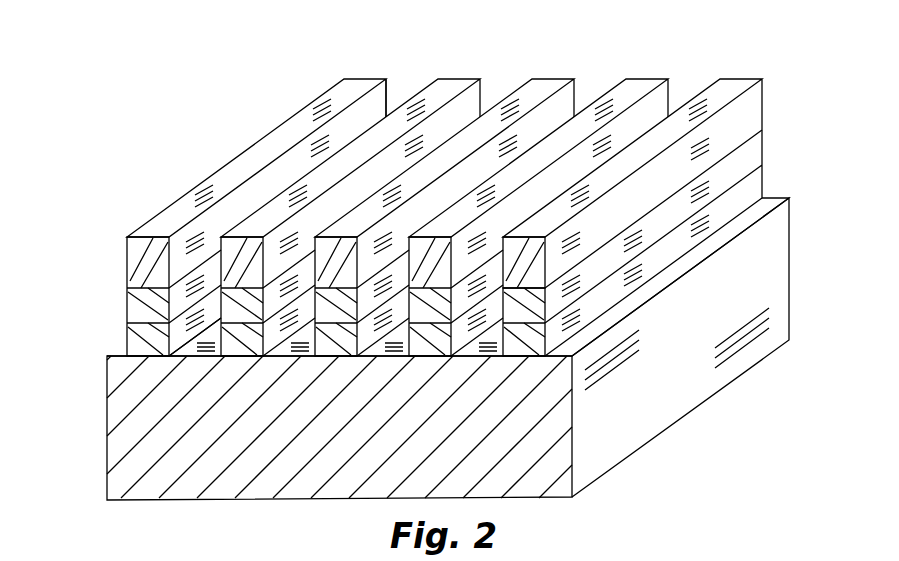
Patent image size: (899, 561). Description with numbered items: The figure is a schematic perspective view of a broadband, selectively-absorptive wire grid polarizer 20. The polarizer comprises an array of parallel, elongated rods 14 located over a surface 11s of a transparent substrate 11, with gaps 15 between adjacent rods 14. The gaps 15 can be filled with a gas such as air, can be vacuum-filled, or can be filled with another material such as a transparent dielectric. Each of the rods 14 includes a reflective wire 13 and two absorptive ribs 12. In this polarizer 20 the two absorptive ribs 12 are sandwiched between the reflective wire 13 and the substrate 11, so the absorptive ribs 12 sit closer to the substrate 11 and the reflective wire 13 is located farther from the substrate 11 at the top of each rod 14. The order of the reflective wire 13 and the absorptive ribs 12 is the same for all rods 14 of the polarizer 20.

The selectively-absorptive wire grid polarizer 20 is at (132, 111).
The gaps 15 is at (399, 78).
The absorptive ribs 12 is at (747, 190).
The surface 11s is at (777, 201).
The reflective wire 13 is at (654, 203).
The substrate 11 is at (692, 357).
The rods 14 is at (68, 272).